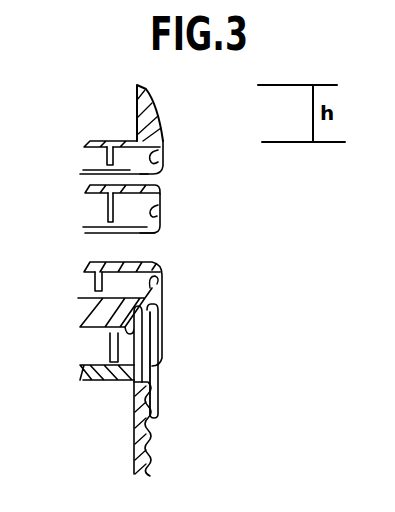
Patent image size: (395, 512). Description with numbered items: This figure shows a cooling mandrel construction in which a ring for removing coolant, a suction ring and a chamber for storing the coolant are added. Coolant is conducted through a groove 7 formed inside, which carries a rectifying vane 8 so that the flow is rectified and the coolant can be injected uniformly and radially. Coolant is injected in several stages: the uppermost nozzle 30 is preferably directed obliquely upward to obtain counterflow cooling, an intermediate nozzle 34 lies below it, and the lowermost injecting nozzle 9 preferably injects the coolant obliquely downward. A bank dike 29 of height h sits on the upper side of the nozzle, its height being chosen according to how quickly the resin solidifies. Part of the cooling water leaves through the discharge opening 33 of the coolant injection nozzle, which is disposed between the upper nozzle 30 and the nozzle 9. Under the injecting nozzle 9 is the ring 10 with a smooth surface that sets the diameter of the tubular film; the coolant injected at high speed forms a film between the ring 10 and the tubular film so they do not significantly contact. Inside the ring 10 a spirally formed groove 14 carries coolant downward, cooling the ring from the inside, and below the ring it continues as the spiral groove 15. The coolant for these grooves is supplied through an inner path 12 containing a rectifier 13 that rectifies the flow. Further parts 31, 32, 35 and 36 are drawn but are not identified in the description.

The groove 7 is at (162, 285).
The rectifying vane 8 is at (98, 284).
The injecting nozzle 9 is at (160, 268).
The ring for setting the film diameter 10 is at (162, 330).
The inner path for coolant 12 is at (105, 350).
The rectifier 13 is at (108, 338).
The spirally formed groove 14 is at (160, 385).
The spiral groove 15 is at (155, 432).
The bank dike 29 is at (153, 105).
The uppermost nozzle for injecting coolant 30 is at (148, 142).
The hook lip 31 is at (140, 160).
The tab 32 is at (110, 152).
The discharge opening of the coolant injection nozzle 33 is at (148, 178).
The intermediate nozzle 34 is at (157, 205).
The inner curl 35 is at (140, 218).
The tab 36 is at (110, 212).